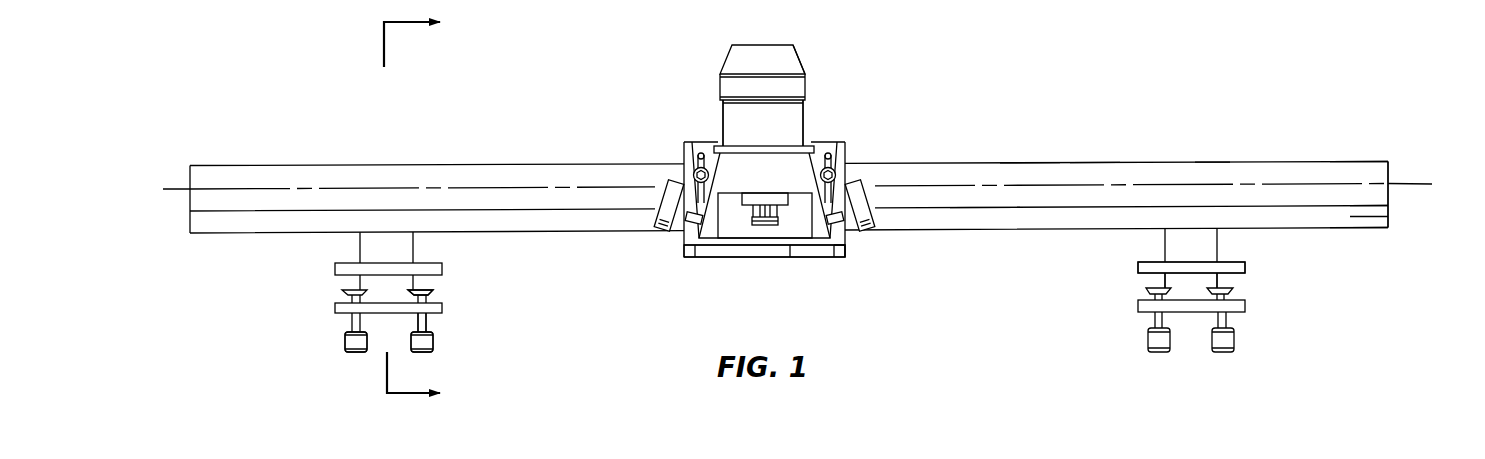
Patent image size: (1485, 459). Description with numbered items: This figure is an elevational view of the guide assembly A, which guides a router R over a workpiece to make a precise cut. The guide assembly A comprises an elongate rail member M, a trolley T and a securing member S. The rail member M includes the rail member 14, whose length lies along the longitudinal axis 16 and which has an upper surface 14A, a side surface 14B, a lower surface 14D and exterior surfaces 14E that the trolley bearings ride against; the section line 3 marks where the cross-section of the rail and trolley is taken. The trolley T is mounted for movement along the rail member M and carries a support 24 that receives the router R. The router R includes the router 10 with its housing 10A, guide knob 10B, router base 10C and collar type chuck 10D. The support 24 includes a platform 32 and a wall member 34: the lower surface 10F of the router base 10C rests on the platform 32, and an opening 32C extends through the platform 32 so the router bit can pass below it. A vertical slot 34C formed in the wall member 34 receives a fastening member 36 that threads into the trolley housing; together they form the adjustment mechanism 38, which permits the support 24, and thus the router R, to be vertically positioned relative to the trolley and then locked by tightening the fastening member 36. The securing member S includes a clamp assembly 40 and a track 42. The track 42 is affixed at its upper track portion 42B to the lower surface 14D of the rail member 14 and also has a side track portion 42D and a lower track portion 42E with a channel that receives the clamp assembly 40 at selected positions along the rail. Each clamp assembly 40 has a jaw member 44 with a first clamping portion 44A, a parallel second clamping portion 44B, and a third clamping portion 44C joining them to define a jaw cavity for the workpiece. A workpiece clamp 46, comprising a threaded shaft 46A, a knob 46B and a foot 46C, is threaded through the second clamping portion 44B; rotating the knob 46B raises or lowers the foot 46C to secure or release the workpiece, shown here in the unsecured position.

The section line 3- 3 is at (421, 209).
The router 10 is at (722, 60).
The housing 10A is at (735, 125).
The guide knob 10B is at (870, 197).
The router base 10C is at (682, 243).
The collar type chuck 10D is at (750, 222).
The lower surface of router base 10F is at (759, 257).
The rail member 14 is at (1157, 162).
The upper surface 14A is at (1092, 163).
The side surface 14B is at (1212, 172).
The lower surface 14D is at (984, 207).
The exterior surfaces 14E is at (1028, 163).
The longitudinal axis 16 is at (796, 187).
The support 24 is at (688, 256).
The platform 32 is at (846, 250).
The opening 32C is at (784, 258).
The wall member 34 is at (848, 143).
The vertical slot 34C is at (689, 148).
The fastening member 36 is at (836, 170).
The adjustment mechanism 38 is at (692, 170).
The clamp assembly 40 is at (340, 315).
The track 42 is at (1357, 218).
The upper track portion 42B is at (1372, 204).
The side track portion 42D is at (1372, 216).
The lower track portion 42E is at (1343, 229).
The jaw member 44 is at (333, 308).
The first clamping portion 44A is at (1143, 268).
The second clamping portion 44B is at (1143, 306).
The third clamping portion 44C is at (1177, 278).
The workpiece clamp 46 is at (343, 345).
The threaded shaft 46A is at (427, 322).
The knob 46B is at (430, 340).
The foot 46C is at (425, 291).
The guide assembly A is at (503, 146).
The router R is at (805, 58).
The securing member S is at (333, 268).
The trolley T is at (845, 259).
The rail member M is at (1343, 161).